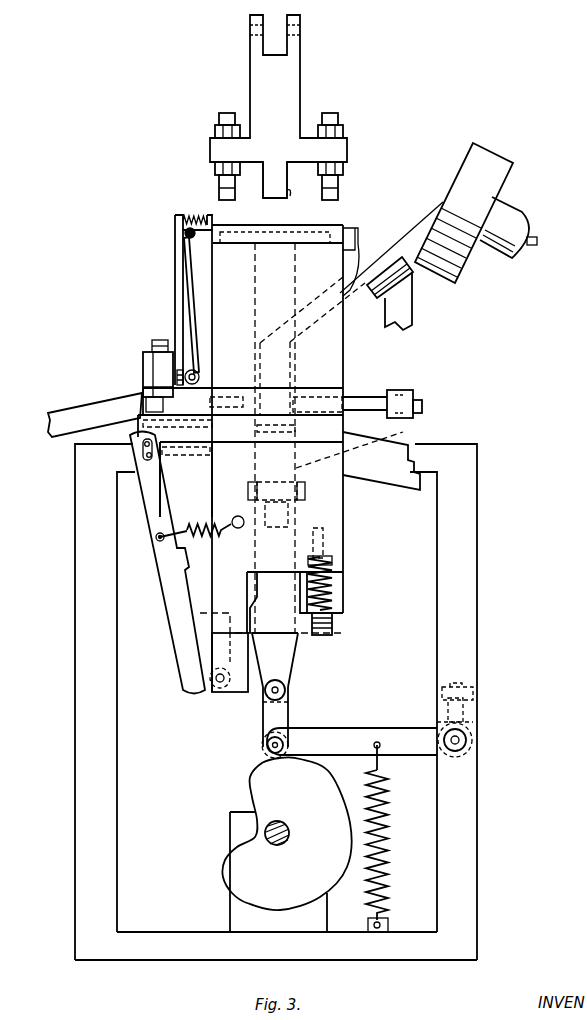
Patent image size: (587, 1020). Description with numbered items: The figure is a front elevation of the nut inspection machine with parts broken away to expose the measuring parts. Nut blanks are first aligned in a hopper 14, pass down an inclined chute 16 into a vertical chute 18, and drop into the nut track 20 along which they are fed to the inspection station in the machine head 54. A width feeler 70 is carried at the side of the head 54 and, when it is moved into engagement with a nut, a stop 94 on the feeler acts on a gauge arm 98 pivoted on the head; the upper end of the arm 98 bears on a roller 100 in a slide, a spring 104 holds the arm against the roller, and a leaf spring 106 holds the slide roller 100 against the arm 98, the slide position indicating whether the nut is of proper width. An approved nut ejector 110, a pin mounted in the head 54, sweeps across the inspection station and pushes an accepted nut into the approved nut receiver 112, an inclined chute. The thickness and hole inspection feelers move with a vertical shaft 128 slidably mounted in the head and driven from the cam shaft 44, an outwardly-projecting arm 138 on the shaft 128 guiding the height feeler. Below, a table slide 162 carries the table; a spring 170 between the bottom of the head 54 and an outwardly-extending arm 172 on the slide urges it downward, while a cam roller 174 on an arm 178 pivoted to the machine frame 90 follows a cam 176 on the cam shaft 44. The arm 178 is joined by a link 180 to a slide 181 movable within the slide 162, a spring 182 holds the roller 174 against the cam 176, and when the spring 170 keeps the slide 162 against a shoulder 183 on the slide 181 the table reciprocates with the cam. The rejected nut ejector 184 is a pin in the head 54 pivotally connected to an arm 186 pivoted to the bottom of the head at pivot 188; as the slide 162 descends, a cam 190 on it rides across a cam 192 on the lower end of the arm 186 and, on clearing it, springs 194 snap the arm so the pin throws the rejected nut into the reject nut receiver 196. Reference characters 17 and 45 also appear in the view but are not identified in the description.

The hopper 14 is at (493, 198).
The inclined chute 16 is at (321, 316).
The wire 17 is at (273, 393).
The vertical chute 18 is at (290, 369).
The nut track 20 is at (240, 412).
The cam shaft 44 is at (265, 836).
The connection line 45 is at (361, 444).
The machine head 54 is at (333, 533).
The width feeler 70 is at (183, 397).
The machine frame 90 is at (478, 586).
The stop 94 is at (178, 374).
The gauge arm 98 is at (183, 274).
The roller 100 is at (186, 238).
The spring 104 is at (197, 214).
The leaf spring 106 is at (360, 253).
The approved nut ejector 110 is at (365, 394).
The approved nut receiver 112 is at (76, 410).
The vertical shaft 128 is at (290, 197).
The outwardly-projecting arm 138 is at (278, 107).
The table slide 162 is at (305, 636).
The spring 170 is at (335, 588).
The outwardly-extending arm 172 is at (340, 628).
The cam roller 174 is at (263, 756).
The cam 176 is at (265, 792).
The arm 178 is at (333, 732).
The link 180 is at (290, 716).
The slide 181 is at (296, 666).
The spring 182 is at (387, 794).
The shoulder 183 is at (233, 677).
The rejected nut ejector 184 is at (186, 479).
The arm 186 is at (156, 527).
The pivot 188 is at (219, 683).
The cam 190 is at (238, 615).
The cam 192 is at (202, 627).
The springs 194 is at (199, 520).
The reject nut receiver 196 is at (397, 481).